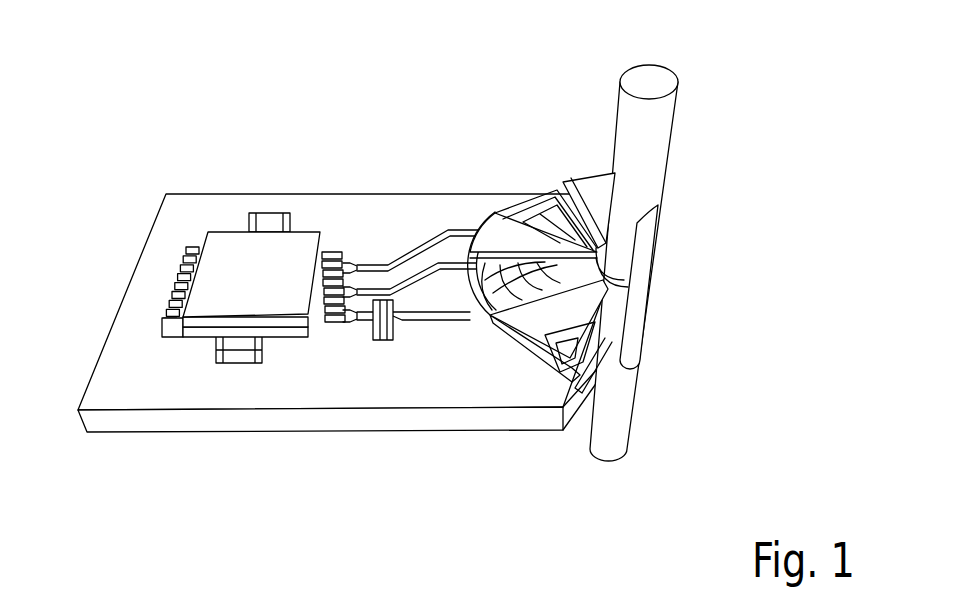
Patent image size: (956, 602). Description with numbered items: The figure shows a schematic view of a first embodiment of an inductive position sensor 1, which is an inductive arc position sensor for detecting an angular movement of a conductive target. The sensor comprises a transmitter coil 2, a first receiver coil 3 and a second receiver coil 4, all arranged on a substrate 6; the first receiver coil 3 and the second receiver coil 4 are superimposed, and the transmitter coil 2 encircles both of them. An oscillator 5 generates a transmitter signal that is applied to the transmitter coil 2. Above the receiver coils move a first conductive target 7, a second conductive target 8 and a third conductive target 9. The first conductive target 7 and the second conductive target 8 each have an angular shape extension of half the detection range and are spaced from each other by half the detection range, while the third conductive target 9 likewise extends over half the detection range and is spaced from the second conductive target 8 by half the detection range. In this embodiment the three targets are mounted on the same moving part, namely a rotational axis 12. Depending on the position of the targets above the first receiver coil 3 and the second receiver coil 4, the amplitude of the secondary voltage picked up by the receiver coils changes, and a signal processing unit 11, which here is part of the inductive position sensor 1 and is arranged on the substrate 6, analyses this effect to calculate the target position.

The inductive position sensor 1 is at (103, 135).
The transmitter coil 2 is at (538, 367).
The first receiver coil 3 is at (572, 327).
The second receiver coil 4 is at (585, 377).
The oscillator 5 is at (383, 312).
The substrate 6 is at (128, 387).
The first conductive target 7 is at (548, 321).
The second conductive target 8 is at (496, 232).
The third conductive target 9 is at (593, 193).
The signal processing unit 11 is at (228, 262).
The rotational axis 12 is at (613, 413).